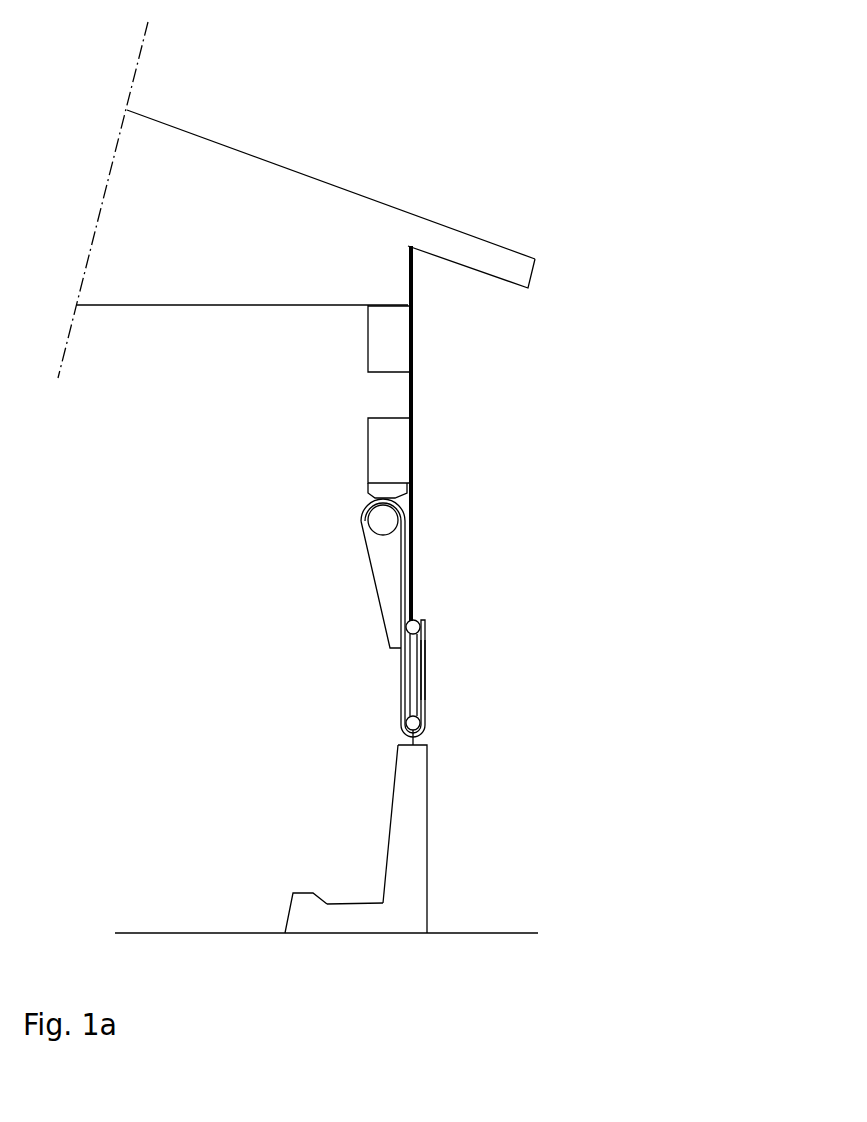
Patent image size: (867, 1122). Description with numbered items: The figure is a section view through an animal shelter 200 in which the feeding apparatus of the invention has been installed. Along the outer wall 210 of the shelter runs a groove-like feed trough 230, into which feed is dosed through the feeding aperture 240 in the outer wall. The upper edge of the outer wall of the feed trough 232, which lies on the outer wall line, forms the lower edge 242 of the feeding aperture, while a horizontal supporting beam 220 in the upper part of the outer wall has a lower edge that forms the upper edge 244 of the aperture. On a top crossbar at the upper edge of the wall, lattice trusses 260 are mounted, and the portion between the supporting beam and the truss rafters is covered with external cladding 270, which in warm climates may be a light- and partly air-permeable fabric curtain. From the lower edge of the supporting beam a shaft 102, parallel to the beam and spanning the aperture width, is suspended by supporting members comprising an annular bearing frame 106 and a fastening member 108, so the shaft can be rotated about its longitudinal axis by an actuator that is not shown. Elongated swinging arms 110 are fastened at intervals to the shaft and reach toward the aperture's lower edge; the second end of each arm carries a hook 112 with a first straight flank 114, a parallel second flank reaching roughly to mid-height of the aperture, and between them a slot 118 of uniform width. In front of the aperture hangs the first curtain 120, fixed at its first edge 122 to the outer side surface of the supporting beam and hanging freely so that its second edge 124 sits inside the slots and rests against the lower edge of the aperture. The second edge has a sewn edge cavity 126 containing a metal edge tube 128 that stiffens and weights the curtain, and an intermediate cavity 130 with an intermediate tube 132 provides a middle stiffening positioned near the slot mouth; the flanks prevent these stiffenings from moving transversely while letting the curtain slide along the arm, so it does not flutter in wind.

The animal shelter 200 is at (245, 145).
The lattice trusses 260 is at (357, 235).
The outer wall 210 is at (555, 328).
The external cladding 270 is at (411, 390).
The supporting beam 220 is at (383, 440).
The first edge 122 is at (411, 467).
The upper edge 244 is at (411, 486).
The first curtain 120 is at (411, 543).
The fastening member 108 is at (366, 493).
The annular bearing frame 106 is at (365, 511).
The shaft 102 is at (383, 520).
The swinging arm 110 is at (384, 569).
The feeding aperture 240 is at (394, 668).
The first straight flank 114 is at (397, 704).
The intermediate tube 132 is at (415, 622).
The intermediate cavity 130 is at (425, 631).
The slot 118 is at (422, 679).
The hook 112 is at (583, 672).
The edge tube 128 is at (424, 723).
The edge cavity 126 is at (424, 737).
The second edge 124 is at (428, 744).
The lower edge 242 is at (398, 745).
The outer wall of the feed trough 232 is at (412, 827).
The feed trough 230 is at (357, 923).